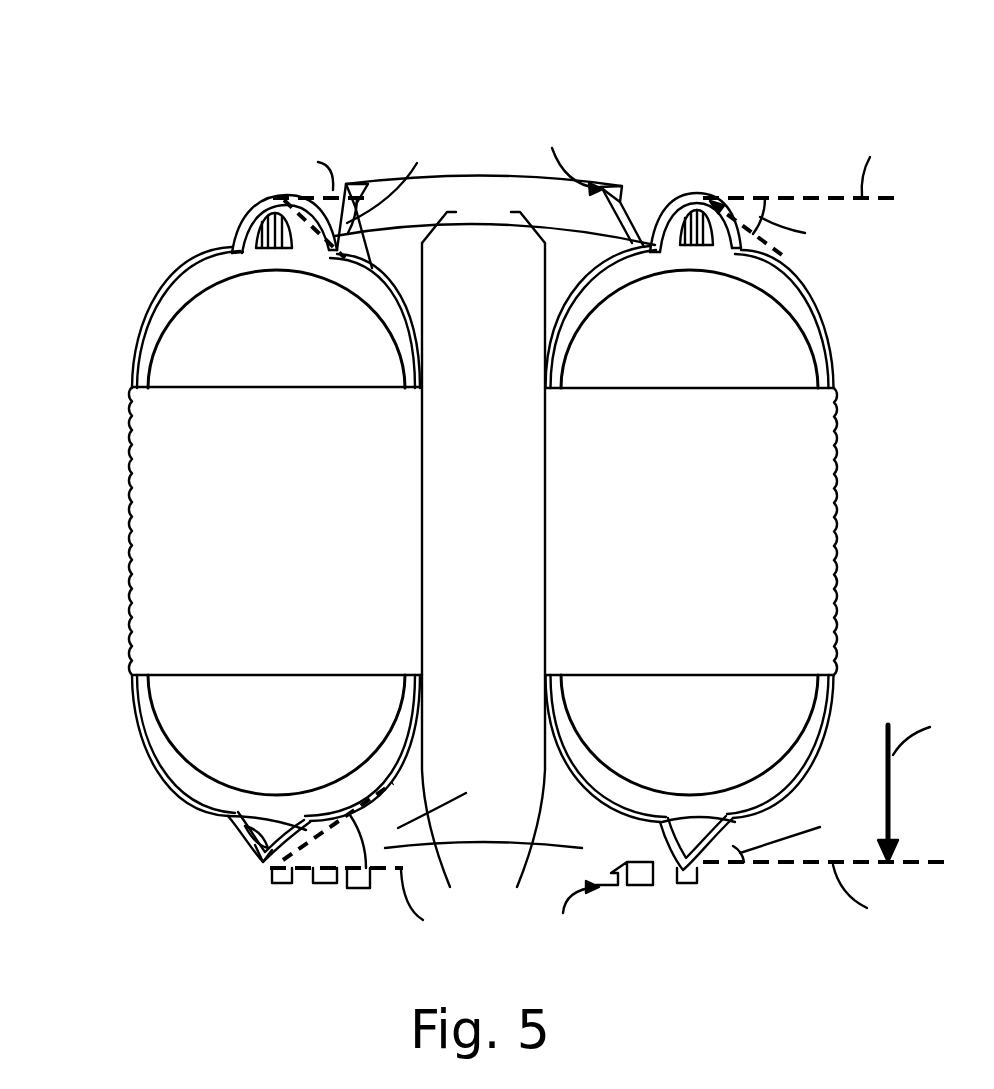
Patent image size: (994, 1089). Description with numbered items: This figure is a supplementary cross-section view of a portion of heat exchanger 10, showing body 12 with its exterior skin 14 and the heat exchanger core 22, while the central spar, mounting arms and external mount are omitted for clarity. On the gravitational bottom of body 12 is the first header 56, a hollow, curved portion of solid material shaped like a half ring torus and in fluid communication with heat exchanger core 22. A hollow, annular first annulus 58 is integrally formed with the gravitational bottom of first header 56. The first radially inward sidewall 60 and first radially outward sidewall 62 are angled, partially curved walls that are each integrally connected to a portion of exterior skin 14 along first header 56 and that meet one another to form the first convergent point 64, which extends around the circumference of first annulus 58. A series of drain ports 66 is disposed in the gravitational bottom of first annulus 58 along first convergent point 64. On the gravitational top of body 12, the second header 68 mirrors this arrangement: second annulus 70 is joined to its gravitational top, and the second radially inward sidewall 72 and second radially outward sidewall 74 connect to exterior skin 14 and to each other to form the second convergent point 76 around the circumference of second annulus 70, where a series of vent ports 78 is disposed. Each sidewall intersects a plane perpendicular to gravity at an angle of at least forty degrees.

The heat exchanger 10 is at (790, 98).
The body 12 is at (140, 338).
The exterior skin 14 is at (131, 486).
The heat exchanger core 22 is at (183, 553).
The first header 56 is at (147, 742).
The first annulus 58 is at (222, 828).
The first radially inward sidewall 60 is at (227, 815).
The first radially outward sidewall 62 is at (243, 850).
The first convergent point 64 is at (265, 864).
The drain port 66 is at (703, 862).
The second header 68 is at (167, 292).
The second annulus 70 is at (247, 213).
The second radially inward sidewall 72 is at (265, 234).
The second radially outward sidewall 74 is at (230, 227).
The second convergent point 76 is at (263, 213).
The vent port 78 is at (693, 200).